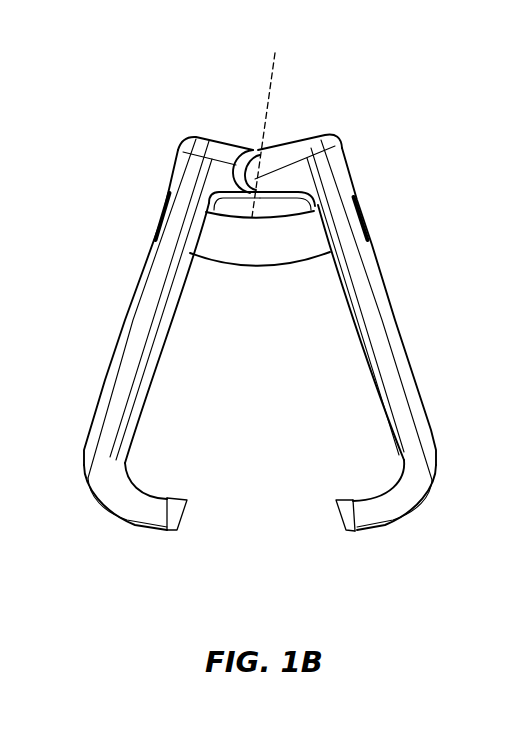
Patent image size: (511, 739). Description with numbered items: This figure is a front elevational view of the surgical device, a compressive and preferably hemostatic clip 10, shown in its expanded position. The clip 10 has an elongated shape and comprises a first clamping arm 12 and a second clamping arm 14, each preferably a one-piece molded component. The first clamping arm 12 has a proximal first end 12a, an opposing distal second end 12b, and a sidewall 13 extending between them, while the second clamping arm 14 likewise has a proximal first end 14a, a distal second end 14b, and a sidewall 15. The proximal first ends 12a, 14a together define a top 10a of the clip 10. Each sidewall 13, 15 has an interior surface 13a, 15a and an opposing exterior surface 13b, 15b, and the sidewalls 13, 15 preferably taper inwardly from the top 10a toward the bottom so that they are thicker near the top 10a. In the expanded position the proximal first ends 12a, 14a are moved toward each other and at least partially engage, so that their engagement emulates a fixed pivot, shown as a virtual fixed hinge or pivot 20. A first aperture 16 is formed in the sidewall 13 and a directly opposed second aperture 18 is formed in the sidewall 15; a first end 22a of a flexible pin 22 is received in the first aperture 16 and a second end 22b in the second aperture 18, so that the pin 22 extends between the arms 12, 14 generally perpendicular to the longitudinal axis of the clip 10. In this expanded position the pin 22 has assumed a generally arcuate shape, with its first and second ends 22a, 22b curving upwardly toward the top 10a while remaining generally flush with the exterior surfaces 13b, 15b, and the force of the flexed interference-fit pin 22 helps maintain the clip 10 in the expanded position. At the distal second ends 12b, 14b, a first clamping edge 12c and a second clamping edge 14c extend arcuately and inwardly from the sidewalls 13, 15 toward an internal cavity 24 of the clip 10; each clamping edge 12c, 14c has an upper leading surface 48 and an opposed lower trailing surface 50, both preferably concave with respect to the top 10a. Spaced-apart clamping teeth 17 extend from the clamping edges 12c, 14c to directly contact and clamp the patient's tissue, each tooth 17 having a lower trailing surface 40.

The clip 10 is at (191, 75).
The top of the clip 10a is at (229, 142).
The first clamping arm 12 is at (117, 350).
The proximal first end of the first clamping arm 12a is at (251, 150).
The distal second end of the first clamping arm 12b is at (164, 533).
The first clamping edge 12c is at (123, 504).
The sidewall of the first clamping arm 13 is at (133, 294).
The interior surface of the first sidewall 13a is at (172, 318).
The exterior surface of the first sidewall 13b is at (126, 323).
The second clamping arm 14 is at (412, 350).
The proximal first end of the second clamping arm 14a is at (272, 150).
The distal second end of the second clamping arm 14b is at (355, 533).
The second clamping edge 14c is at (395, 503).
The sidewall of the second clamping arm 15 is at (393, 298).
The interior surface of the second sidewall 15a is at (360, 346).
The exterior surface of the second sidewall 15b is at (403, 322).
The first aperture 16 is at (155, 240).
The clamping teeth 17 is at (187, 513).
The second aperture 18 is at (371, 240).
The virtual fixed hinge or pivot 20 is at (281, 135).
The pin 22 is at (228, 248).
The first end of the pin 22a is at (161, 218).
The second end of the pin 22b is at (364, 218).
The internal cavity 24 is at (197, 403).
The second or lower surface of the clamping tooth 40 is at (397, 522).
The first or upper surface of the clamping edge 48 is at (160, 495).
The second or lower surface of the clamping edge 50 is at (123, 524).